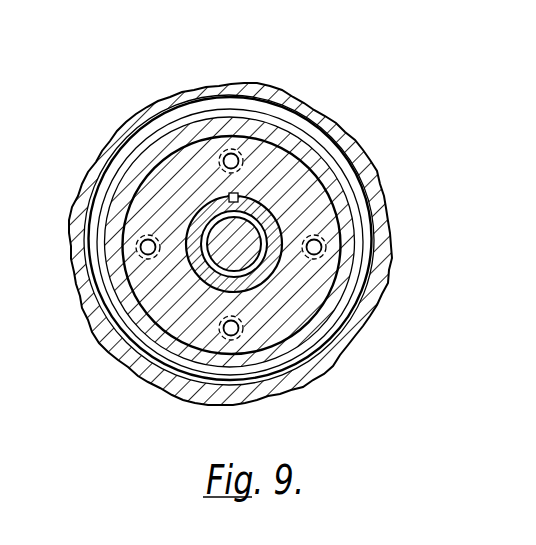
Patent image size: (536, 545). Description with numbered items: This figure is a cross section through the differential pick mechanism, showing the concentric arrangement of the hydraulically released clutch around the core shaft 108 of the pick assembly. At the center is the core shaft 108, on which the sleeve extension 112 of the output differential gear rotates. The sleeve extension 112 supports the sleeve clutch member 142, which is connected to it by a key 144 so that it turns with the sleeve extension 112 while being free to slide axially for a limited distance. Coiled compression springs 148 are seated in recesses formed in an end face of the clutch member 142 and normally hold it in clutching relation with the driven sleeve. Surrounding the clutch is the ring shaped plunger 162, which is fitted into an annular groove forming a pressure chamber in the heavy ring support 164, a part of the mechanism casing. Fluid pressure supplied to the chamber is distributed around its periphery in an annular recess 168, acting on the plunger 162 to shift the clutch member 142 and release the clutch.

The heavy ring support 164 is at (304, 104).
The ring shaped plunger 162 is at (338, 147).
The annular recess 168 is at (255, 113).
The sleeve clutch member 142 is at (320, 205).
The core shaft 108 is at (208, 278).
The sleeve extension 112 is at (272, 266).
The key 144 is at (229, 196).
The coiled compression springs 148 is at (220, 160).